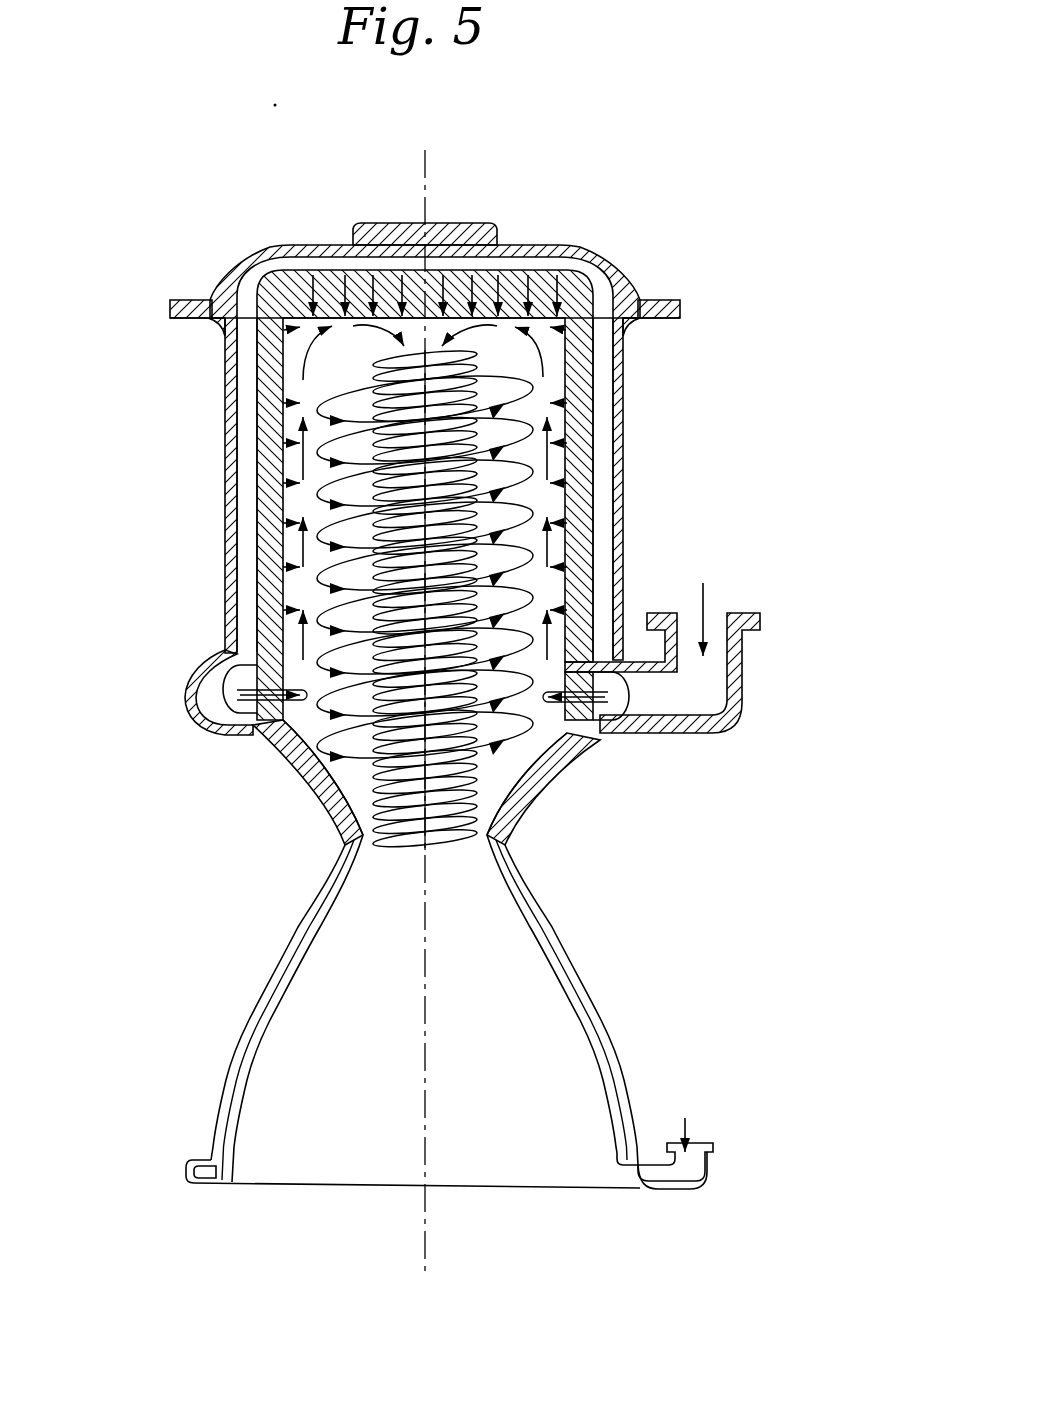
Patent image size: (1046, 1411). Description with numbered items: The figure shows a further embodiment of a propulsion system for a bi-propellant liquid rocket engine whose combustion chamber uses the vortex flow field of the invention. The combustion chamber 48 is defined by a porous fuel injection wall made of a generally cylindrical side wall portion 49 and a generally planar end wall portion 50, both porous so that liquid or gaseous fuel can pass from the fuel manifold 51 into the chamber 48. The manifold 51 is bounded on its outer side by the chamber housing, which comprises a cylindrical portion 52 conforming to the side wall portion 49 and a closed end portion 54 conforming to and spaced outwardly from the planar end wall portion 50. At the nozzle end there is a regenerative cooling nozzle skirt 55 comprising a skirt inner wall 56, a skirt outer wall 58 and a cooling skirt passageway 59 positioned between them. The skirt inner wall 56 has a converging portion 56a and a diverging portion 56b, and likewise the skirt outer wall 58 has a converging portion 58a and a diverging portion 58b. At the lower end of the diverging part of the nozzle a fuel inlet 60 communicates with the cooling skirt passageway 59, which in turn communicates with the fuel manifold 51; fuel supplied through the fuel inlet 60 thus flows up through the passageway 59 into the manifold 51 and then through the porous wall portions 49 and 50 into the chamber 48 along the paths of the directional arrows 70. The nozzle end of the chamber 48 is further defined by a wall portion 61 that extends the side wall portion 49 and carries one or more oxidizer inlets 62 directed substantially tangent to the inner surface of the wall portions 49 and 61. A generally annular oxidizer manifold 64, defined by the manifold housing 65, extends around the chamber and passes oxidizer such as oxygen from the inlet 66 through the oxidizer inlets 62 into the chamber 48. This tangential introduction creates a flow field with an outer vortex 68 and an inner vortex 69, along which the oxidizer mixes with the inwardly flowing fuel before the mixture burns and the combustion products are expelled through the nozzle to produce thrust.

The combustion chamber 48 is at (325, 373).
The cylindrical side wall portion 49 is at (598, 480).
The planar end wall portion 50 is at (512, 290).
The fuel manifold 51 is at (616, 372).
The cylindrical portion 52 is at (612, 432).
The closed end portion 54 is at (487, 228).
The regenerative cooling nozzle skirt 55 is at (188, 1177).
The skirt inner wall 56 is at (517, 916).
The converging portion 56a is at (500, 782).
The diverging portion 56b is at (594, 1068).
The skirt outer wall 58 is at (555, 927).
The converging portion 58a is at (512, 812).
The diverging portion 58b is at (612, 1047).
The cooling skirt passageway 59 is at (576, 982).
The fuel inlet 60 is at (707, 1168).
The wall portion 61 is at (637, 678).
The oxidizer inlets 62 is at (265, 730).
The oxidizer manifold 64 is at (214, 727).
The manifold housing 65 is at (186, 684).
The inlet 66 is at (760, 618).
The outer vortex 68 is at (335, 573).
The inner vortex 69 is at (300, 490).
The directional arrows 70 is at (628, 316).